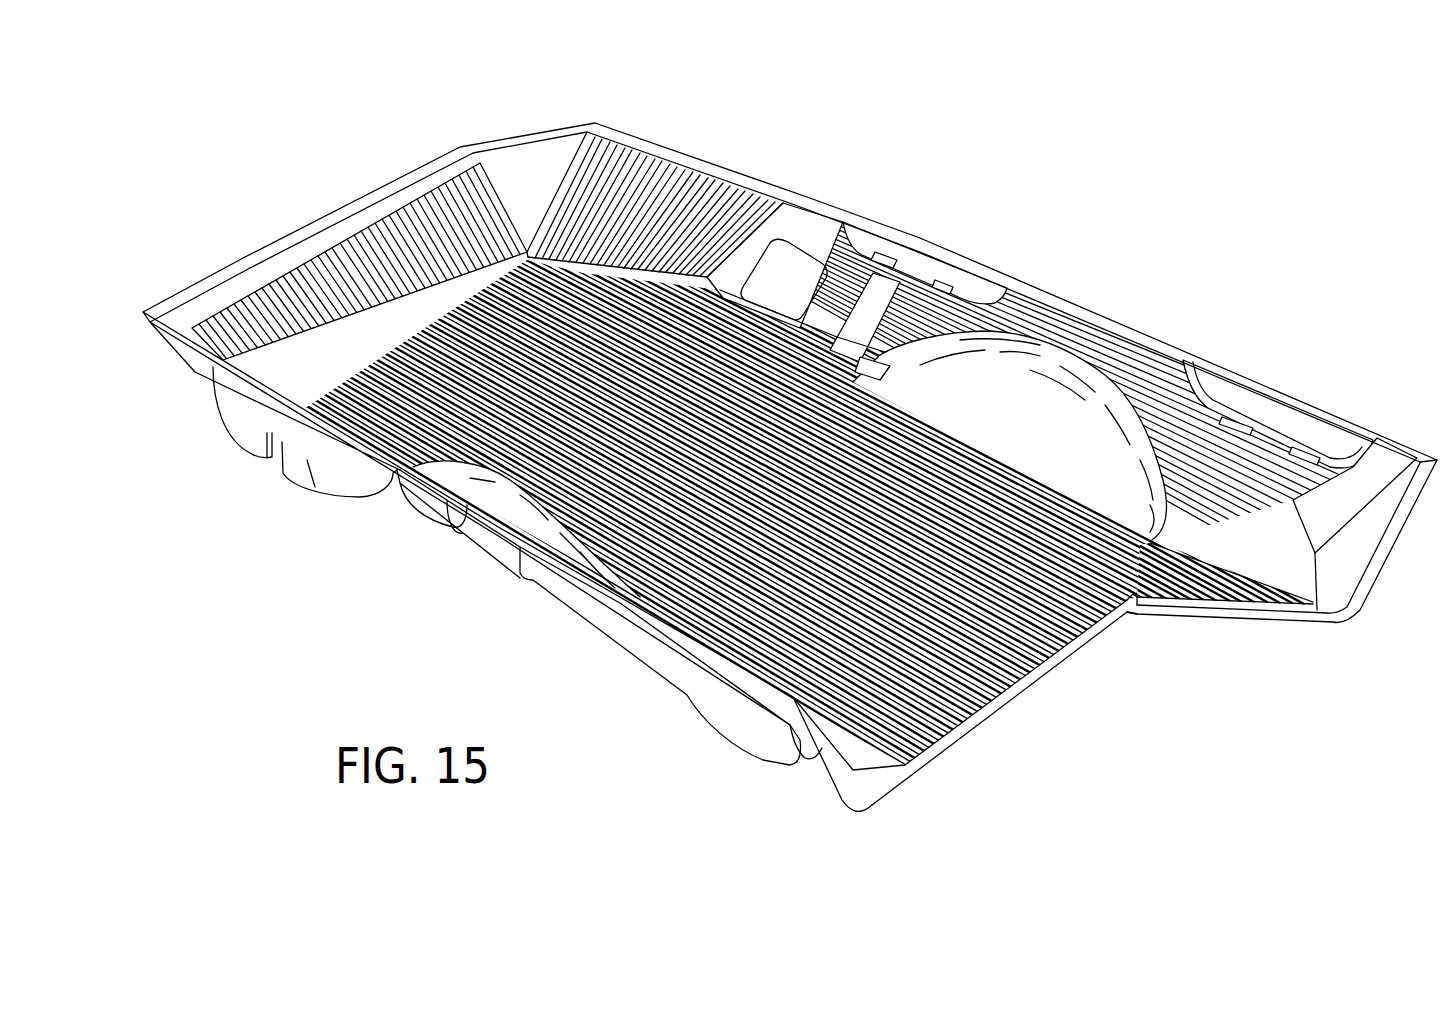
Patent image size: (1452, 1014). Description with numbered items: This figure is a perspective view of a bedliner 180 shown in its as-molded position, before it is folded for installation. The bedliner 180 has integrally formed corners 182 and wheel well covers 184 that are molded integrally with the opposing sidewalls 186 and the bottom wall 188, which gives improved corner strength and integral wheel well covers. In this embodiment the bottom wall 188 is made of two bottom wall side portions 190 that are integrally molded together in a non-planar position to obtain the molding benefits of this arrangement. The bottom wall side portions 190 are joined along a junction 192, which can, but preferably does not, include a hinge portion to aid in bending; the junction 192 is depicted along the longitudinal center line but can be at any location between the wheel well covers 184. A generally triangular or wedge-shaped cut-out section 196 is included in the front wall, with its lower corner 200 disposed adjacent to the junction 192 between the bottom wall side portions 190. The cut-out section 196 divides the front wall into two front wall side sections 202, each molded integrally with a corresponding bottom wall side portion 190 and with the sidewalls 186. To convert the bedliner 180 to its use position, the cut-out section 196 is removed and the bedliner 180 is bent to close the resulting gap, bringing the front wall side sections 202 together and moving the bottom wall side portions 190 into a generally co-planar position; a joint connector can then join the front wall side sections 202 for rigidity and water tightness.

The bedliner 180 is at (781, 531).
The integrally formed corners 182 is at (150, 320).
The wheel well covers 184 is at (1080, 413).
The sidewalls 186 is at (963, 280).
The bottom wall 188 is at (1020, 717).
The bottom wall side portions 190 is at (1078, 650).
The junction 192 is at (1143, 610).
The cut-out section 196 is at (555, 153).
The lower corner 200 is at (528, 247).
The front wall side sections 202 is at (378, 263).